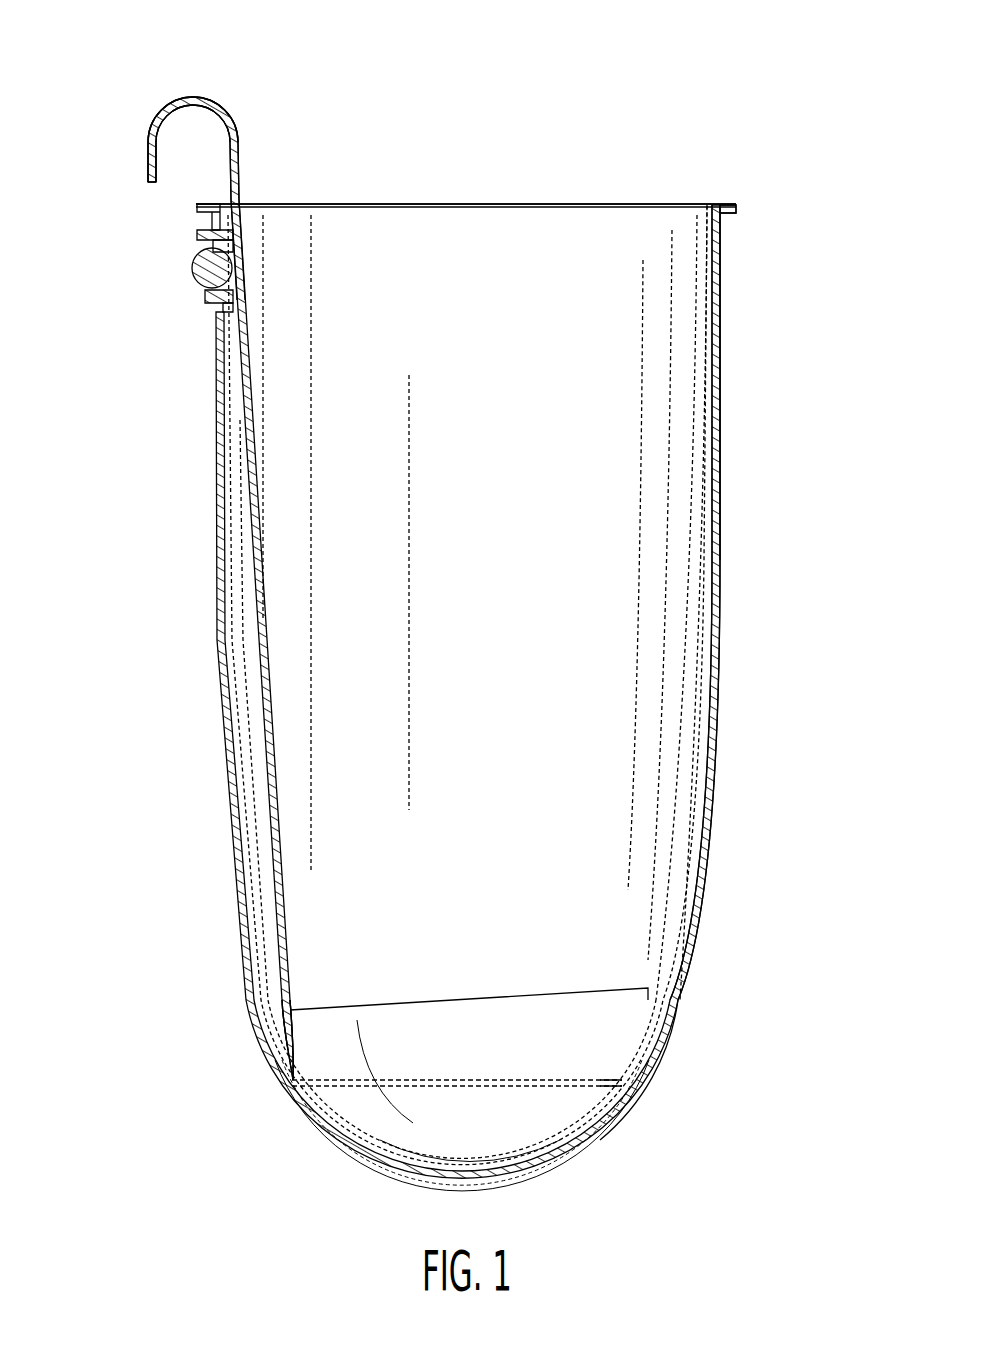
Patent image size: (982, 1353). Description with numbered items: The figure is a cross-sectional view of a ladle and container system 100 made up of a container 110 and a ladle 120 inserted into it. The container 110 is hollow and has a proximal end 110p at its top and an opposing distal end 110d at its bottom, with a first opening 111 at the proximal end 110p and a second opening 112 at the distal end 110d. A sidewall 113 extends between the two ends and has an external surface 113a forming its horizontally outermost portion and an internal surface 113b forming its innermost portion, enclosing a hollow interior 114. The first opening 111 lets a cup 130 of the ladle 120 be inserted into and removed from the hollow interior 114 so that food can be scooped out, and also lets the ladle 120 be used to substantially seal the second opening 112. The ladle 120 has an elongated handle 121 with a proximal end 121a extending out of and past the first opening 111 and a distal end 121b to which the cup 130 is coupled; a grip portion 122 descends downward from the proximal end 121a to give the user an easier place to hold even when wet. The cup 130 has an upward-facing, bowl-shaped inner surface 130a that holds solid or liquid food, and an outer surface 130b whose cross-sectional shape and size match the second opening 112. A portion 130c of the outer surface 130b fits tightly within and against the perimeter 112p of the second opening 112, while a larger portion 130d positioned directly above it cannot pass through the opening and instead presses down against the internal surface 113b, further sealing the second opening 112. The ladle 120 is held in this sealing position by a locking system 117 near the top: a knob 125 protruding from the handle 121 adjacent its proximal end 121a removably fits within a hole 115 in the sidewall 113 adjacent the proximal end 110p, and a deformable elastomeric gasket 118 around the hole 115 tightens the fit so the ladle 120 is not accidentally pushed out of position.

The ladle and container system 100 is at (747, 78).
The container 110 is at (724, 536).
The proximal end 110p is at (699, 187).
The distal end 110d is at (642, 1094).
The first opening 111 is at (528, 195).
The second opening 112 is at (585, 1093).
The perimeter 112p is at (607, 1080).
The sidewall 113 is at (724, 385).
The external surface 113a is at (720, 312).
The internal surface 113b is at (712, 350).
The hollow interior 114 is at (491, 539).
The hole 115 is at (241, 266).
The locking system 117 is at (150, 258).
The gasket 118 is at (205, 300).
The ladle 120 is at (118, 93).
The handle 121 is at (274, 641).
The proximal end 121a is at (193, 96).
The distal end 121b is at (290, 1010).
The grip portion 122 is at (146, 138).
The knob 125 is at (195, 275).
The cup 130 is at (499, 956).
The inner surface 130a is at (425, 1150).
The outer surface 130b is at (528, 1170).
The portion 130c is at (296, 1088).
The portion 130d is at (285, 1084).